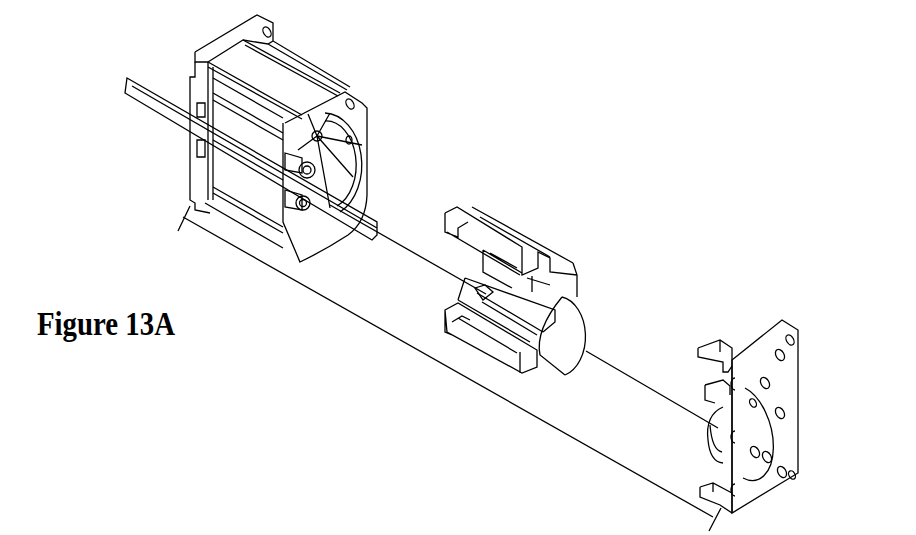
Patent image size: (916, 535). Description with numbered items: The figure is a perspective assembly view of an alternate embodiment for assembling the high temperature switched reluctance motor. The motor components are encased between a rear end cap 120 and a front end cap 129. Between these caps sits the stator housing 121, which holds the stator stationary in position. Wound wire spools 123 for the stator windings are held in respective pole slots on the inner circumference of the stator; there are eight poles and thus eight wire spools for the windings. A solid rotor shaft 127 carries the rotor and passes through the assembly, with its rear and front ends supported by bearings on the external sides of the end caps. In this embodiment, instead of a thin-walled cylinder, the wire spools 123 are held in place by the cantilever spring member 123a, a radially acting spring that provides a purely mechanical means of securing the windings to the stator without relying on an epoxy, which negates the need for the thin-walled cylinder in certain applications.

The rear end cap 120 is at (797, 330).
The stator housing 121 is at (369, 105).
The wire spool 123 is at (556, 246).
The cantilever spring member 123a is at (594, 301).
The rotor shaft 127 is at (132, 77).
The front end cap 129 is at (223, 40).